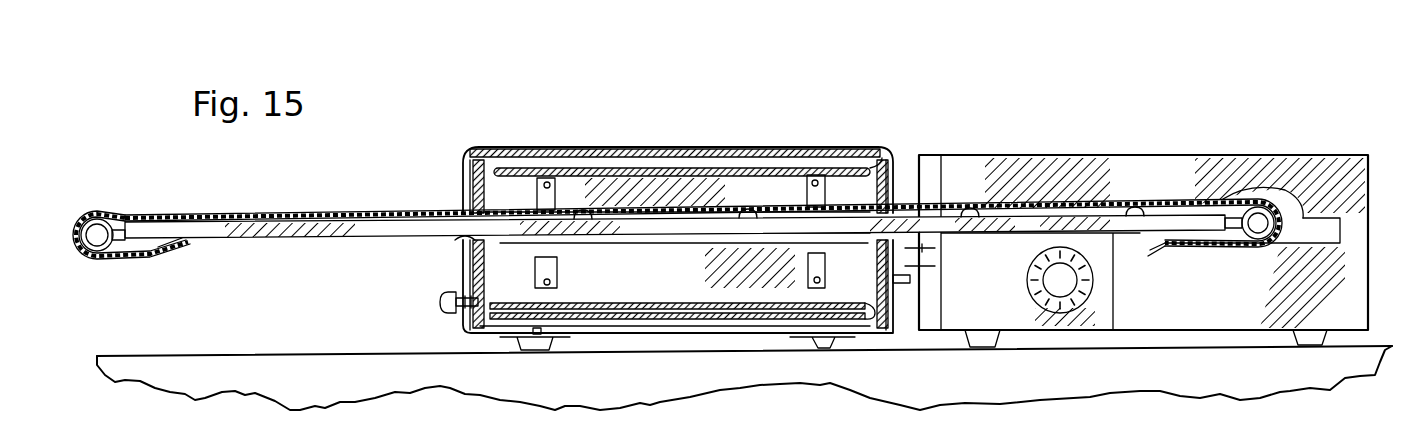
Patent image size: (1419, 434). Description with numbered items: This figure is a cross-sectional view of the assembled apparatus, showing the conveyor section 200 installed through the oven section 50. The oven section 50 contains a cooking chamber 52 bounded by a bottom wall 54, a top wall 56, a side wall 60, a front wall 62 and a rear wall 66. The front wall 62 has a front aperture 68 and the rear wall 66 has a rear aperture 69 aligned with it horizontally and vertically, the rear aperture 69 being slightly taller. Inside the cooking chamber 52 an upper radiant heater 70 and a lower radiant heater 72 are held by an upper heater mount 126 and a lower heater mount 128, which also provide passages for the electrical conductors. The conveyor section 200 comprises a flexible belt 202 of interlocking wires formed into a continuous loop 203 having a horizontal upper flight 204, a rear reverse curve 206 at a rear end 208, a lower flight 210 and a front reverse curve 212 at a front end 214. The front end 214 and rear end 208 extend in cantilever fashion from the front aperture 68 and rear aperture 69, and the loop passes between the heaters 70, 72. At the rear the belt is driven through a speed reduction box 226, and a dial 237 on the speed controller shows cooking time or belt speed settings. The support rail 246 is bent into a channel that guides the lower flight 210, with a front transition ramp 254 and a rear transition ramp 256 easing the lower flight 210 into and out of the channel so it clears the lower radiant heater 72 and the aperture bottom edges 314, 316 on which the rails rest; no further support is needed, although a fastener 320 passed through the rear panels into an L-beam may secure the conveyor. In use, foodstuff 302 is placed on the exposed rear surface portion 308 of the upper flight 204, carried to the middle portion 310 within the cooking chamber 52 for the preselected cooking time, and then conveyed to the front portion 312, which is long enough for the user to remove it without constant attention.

The oven section 50 is at (667, 142).
The cooking chamber 52 is at (750, 193).
The bottom wall 54 is at (712, 318).
The top wall 56 is at (582, 188).
The left side wall 60 is at (570, 188).
The front wall 62 is at (452, 158).
The rear wall 66 is at (861, 194).
The front aperture 68 is at (446, 200).
The rear aperture 69 is at (897, 197).
The upper radiant heater 70 is at (823, 196).
The lower radiant heater 72 is at (813, 282).
The upper heater mount 126 is at (842, 190).
The lower heater mount 128 is at (808, 265).
The conveyor section 200 is at (290, 243).
The flexible belt 202 is at (108, 217).
The continuous loop 203 is at (143, 262).
The upper flight 204 is at (196, 222).
The rear reverse curve 206 is at (1287, 215).
The rear end 208 is at (1258, 198).
The lower flight 210 is at (1143, 251).
The front reverse curve 212 is at (80, 256).
The front end 214 is at (92, 211).
The speed reduction box 226 is at (1016, 193).
The dial 237 is at (1053, 290).
The left support rail 246 is at (257, 245).
The front transition ramp 254 is at (160, 250).
The rear transition ramp 256 is at (1099, 310).
The foodstuff 302 is at (341, 220).
The rear surface portion 308 is at (1165, 215).
The middle portion 310 is at (519, 158).
The front portion 312 is at (178, 218).
The front aperture bottom edge 314 is at (463, 247).
The rear aperture bottom edge 316 is at (900, 262).
The fastener 320 is at (903, 272).